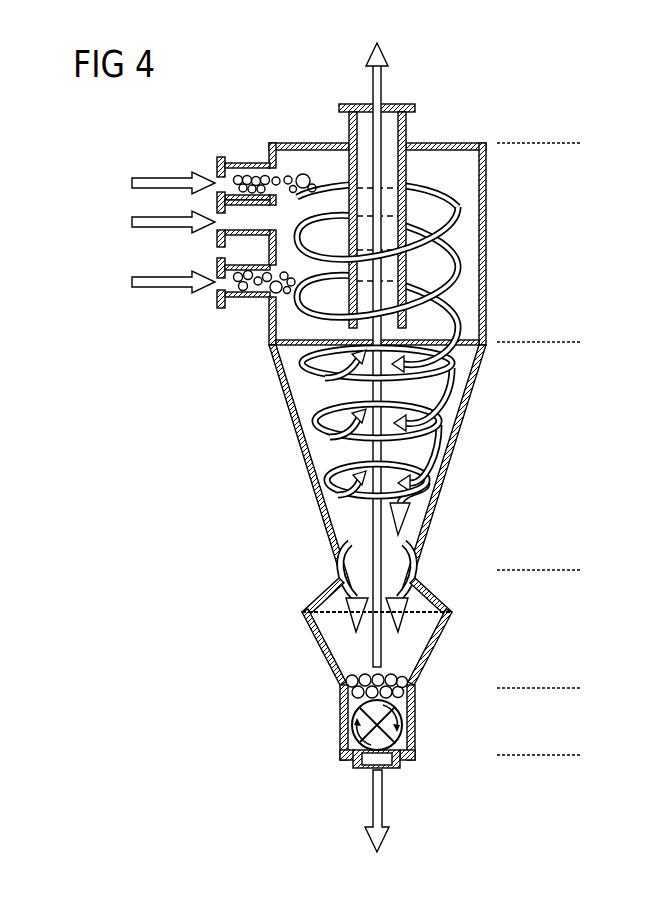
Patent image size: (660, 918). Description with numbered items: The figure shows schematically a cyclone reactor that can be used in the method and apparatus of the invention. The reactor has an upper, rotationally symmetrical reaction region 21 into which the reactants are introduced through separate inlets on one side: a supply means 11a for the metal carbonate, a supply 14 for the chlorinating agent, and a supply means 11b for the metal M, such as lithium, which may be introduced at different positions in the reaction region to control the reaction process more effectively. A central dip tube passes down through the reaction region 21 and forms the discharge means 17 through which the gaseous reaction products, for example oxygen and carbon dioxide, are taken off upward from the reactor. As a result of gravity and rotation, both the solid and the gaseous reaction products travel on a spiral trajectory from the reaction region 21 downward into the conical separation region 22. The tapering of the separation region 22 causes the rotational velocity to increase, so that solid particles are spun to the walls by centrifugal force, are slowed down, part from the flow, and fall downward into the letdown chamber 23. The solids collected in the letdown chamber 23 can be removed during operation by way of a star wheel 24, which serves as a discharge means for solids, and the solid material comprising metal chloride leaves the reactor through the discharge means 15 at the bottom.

The supply means for metal carbonate 11a is at (132, 183).
The supply means for metal M 11b is at (132, 282).
The supply for the chlorinating agent 14 is at (132, 222).
The discharge means for gaseous products 17 is at (383, 80).
The discharge means for solid material 15 is at (382, 805).
The reaction region 21 is at (566, 236).
The separation region 22 is at (566, 454).
The letdown chamber 23 is at (566, 627).
The star wheel 24 is at (566, 725).